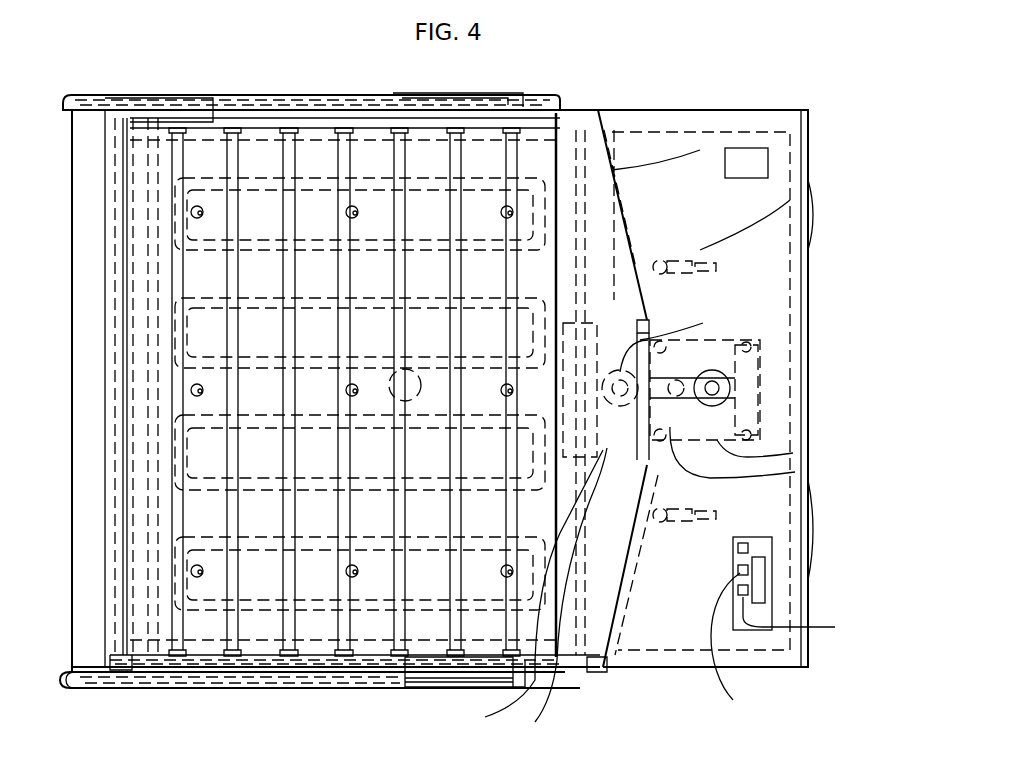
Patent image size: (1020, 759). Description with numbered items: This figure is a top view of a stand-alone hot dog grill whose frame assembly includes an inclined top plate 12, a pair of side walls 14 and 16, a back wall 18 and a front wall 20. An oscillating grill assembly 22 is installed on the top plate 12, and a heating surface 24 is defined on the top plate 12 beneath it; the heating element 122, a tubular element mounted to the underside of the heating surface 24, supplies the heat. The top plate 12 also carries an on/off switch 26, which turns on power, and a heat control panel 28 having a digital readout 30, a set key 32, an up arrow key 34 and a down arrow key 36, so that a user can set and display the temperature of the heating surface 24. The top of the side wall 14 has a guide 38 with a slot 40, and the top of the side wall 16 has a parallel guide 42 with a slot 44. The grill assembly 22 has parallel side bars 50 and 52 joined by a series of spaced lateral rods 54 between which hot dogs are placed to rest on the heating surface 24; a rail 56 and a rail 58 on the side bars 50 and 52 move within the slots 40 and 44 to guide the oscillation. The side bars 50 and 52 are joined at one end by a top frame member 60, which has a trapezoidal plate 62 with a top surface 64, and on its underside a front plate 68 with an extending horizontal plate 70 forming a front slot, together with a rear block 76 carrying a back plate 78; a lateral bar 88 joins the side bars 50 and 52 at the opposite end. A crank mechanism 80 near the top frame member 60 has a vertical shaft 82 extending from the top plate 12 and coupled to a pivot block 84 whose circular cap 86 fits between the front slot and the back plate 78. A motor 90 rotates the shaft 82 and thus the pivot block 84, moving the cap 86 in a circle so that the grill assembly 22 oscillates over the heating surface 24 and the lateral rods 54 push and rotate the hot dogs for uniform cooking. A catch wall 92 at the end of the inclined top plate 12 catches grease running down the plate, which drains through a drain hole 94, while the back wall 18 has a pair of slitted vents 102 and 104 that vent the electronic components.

The inclined top plate 12 is at (798, 188).
The side wall 14 is at (678, 112).
The side wall 16 is at (680, 667).
The back wall 18 is at (815, 365).
The front wall 20 is at (78, 600).
The oscillating grill assembly 22 is at (590, 650).
The heating surface 24 is at (532, 165).
The on/off switch 26 is at (760, 160).
The heat control panel 28 is at (772, 550).
The digital readout 30 is at (763, 592).
The set key 32 is at (748, 548).
The up arrow key 34 is at (735, 648).
The down arrow key 36 is at (808, 619).
The guide 38 is at (263, 72).
The slot 40 is at (82, 98).
The parallel guide 42 is at (238, 690).
The slot 44 is at (97, 688).
The side bar 50 is at (368, 120).
The side bar 52 is at (340, 687).
The lateral rods 54 is at (524, 160).
The rail 56 is at (337, 120).
The rail 58 is at (313, 688).
The top frame member 60 is at (604, 117).
The trapezoidal plate 62 is at (700, 150).
The top surface 64 is at (773, 207).
The front plate 68 is at (652, 340).
The horizontal plate 70 is at (650, 322).
The rear block 76 is at (527, 592).
The back plate 78 is at (553, 591).
The crank mechanism 80 is at (700, 455).
The vertical shaft 82 is at (703, 323).
The pivot block 84 is at (693, 367).
The circular cap 86 is at (735, 389).
The lateral bar 88 is at (175, 405).
The motor 90 is at (795, 472).
The catch wall 92 is at (72, 352).
The drain hole 94 is at (107, 420).
The vent 102 is at (815, 225).
The vent 104 is at (818, 551).
The heating element 122 is at (442, 688).